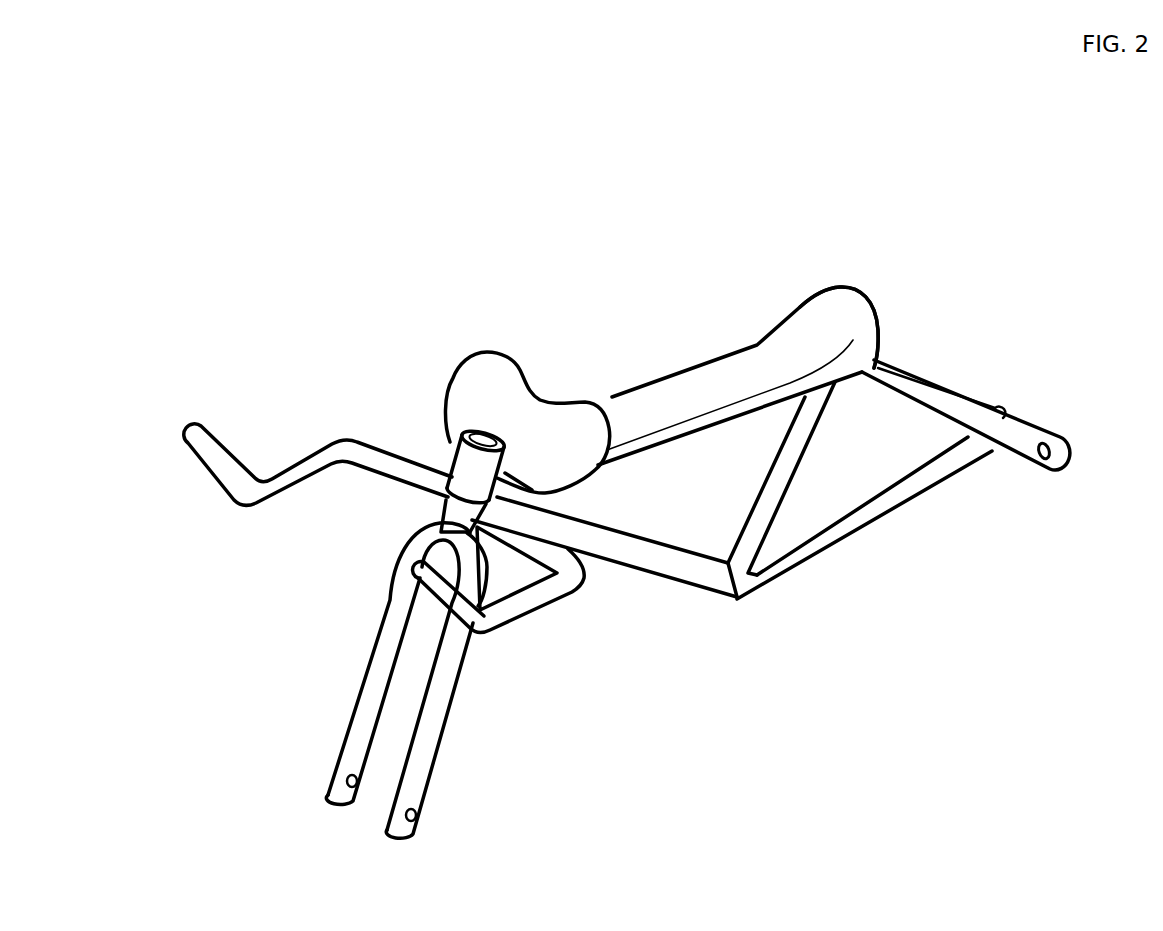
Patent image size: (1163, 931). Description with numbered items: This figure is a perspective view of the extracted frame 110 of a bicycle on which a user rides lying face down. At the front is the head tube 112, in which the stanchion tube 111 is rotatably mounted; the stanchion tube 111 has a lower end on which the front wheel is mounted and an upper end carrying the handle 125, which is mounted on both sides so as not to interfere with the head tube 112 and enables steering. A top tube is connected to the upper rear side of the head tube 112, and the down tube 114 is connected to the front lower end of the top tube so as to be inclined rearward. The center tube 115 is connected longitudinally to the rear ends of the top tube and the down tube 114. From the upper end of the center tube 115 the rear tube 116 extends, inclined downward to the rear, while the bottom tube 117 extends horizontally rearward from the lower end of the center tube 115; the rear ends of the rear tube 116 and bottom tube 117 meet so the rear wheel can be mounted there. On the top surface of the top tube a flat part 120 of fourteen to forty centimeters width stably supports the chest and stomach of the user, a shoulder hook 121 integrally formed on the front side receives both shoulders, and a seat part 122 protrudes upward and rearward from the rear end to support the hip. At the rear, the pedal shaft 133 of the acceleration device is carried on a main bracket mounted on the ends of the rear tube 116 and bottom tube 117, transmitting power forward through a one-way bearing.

The frame 110 is at (771, 636).
The stanchion tube 111 is at (377, 668).
The head tube 112 is at (465, 463).
The down tube 114 is at (655, 555).
The center tube 115 is at (768, 504).
The rear tube 116 is at (933, 410).
The bottom tube 117 is at (883, 500).
The flat part 120 is at (665, 393).
The shoulder hook 121 is at (487, 380).
The seat part 122 is at (828, 322).
The handle 125 is at (288, 477).
The pedal shaft 133 is at (1051, 457).